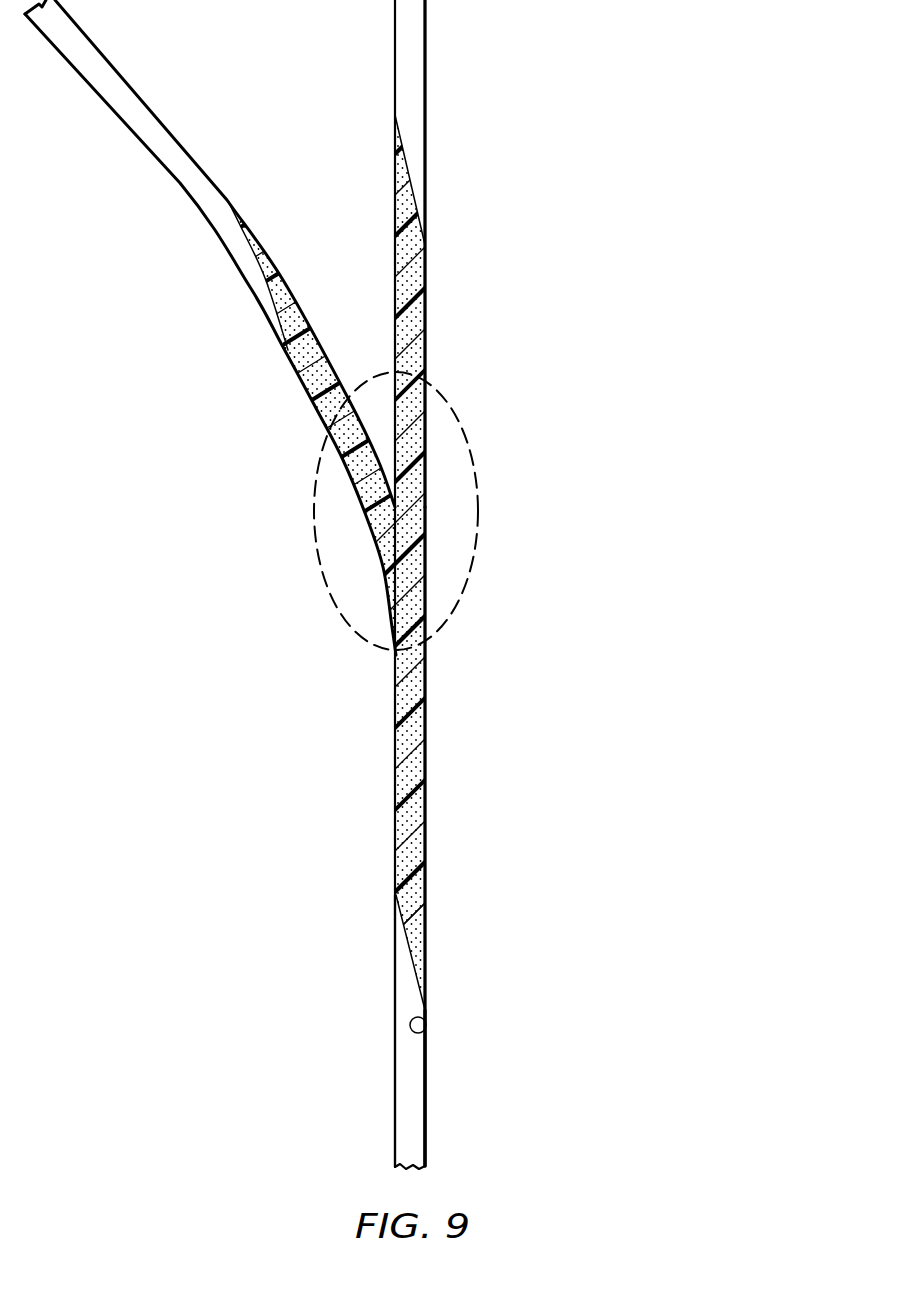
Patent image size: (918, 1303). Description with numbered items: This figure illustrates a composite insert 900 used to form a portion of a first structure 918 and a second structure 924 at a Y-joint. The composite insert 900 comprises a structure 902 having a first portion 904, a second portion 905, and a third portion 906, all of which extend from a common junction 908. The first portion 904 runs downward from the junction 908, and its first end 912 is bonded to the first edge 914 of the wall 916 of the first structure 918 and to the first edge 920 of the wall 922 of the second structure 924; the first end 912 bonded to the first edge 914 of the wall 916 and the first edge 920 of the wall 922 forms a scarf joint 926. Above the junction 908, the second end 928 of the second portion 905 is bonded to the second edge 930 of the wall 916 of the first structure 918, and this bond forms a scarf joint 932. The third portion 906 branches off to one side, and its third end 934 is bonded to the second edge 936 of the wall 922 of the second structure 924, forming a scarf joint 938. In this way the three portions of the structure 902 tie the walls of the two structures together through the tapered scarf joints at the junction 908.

The composite insert 900 is at (496, 427).
The structure 902 is at (480, 857).
The first portion 904 is at (427, 765).
The second portion 905 is at (427, 313).
The third portion 906 is at (308, 383).
The junction 908 is at (478, 515).
The first end 912 is at (427, 963).
The first edge 914 is at (397, 902).
The wall 916 is at (427, 1090).
The first structure 918 is at (545, 576).
The first edge 920 is at (427, 1033).
The wall 922 is at (395, 1080).
The second structure 924 is at (359, 701).
The scarf joint 926 is at (423, 913).
The second end 928 is at (417, 217).
The second edge 930 is at (413, 193).
The scarf joint 932 is at (442, 163).
The third end 934 is at (255, 262).
The second edge 936 is at (233, 216).
The scarf joint 938 is at (232, 296).